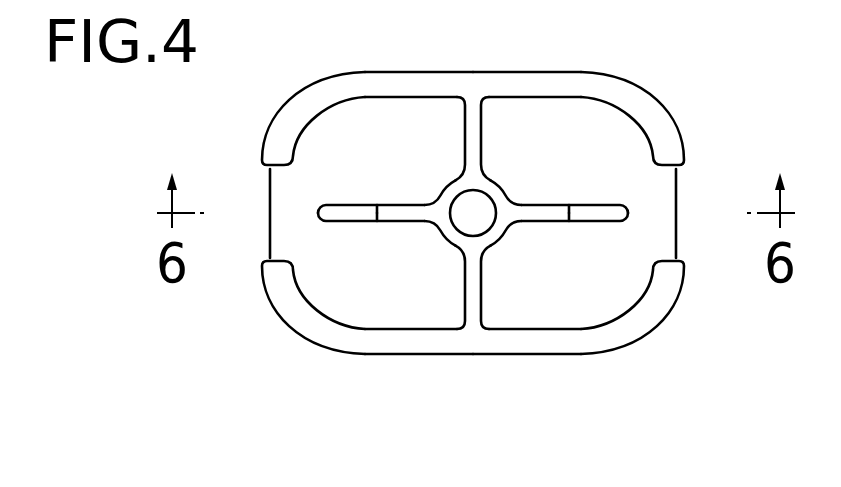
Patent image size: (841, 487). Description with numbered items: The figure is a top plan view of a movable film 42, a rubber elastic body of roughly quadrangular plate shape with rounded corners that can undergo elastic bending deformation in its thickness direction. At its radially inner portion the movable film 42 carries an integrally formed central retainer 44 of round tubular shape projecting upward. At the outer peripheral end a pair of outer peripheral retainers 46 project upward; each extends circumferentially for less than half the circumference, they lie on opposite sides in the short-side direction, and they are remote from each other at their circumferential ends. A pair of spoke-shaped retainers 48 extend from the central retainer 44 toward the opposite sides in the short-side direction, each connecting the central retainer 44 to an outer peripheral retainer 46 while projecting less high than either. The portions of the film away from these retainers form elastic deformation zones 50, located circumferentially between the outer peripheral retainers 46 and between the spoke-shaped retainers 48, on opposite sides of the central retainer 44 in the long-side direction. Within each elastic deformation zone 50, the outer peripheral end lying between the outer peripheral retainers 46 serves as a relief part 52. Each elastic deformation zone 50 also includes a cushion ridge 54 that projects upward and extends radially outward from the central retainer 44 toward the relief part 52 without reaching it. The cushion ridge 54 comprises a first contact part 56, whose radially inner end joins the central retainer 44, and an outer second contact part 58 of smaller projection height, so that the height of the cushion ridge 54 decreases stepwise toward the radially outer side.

The movable film 42 is at (478, 229).
The central retainer 44 is at (452, 183).
The outer peripheral retainer 46 is at (658, 138).
The spoke-shaped retainer 48 is at (473, 130).
The elastic deformation zone 50 is at (365, 132).
The relief part 52 is at (280, 193).
The cushion ridge 54 is at (473, 324).
The first contact part 56 is at (395, 215).
The second contact part 58 is at (352, 215).